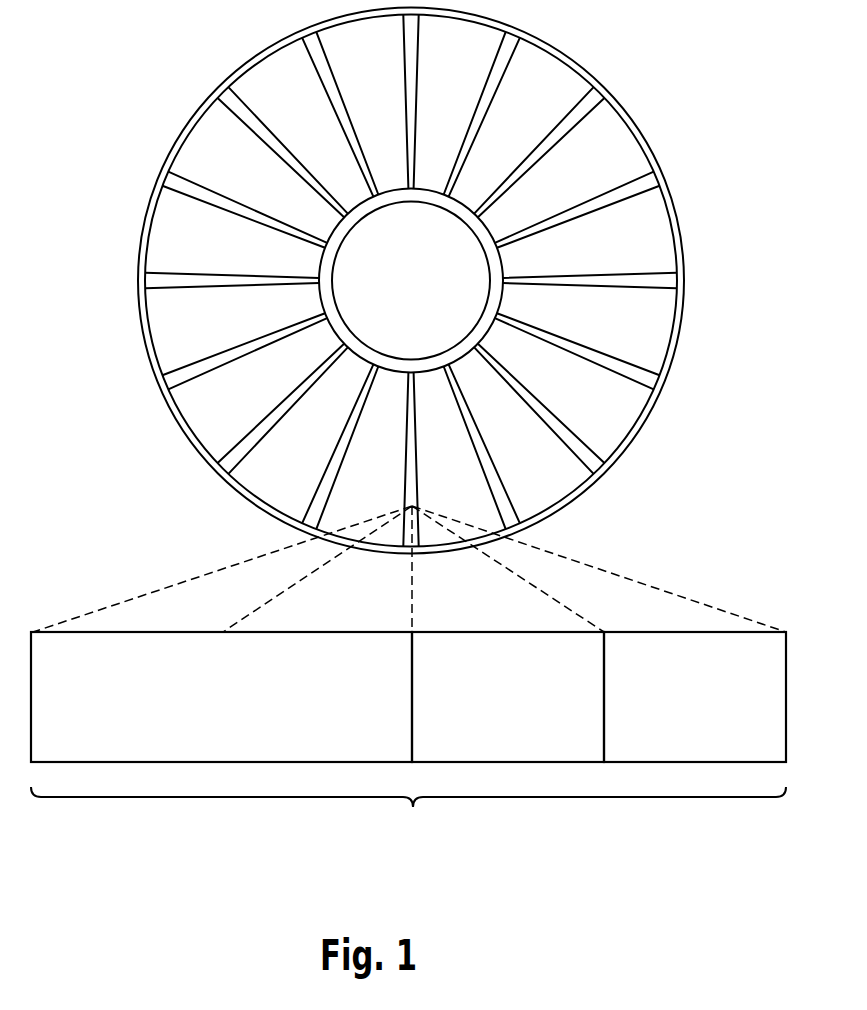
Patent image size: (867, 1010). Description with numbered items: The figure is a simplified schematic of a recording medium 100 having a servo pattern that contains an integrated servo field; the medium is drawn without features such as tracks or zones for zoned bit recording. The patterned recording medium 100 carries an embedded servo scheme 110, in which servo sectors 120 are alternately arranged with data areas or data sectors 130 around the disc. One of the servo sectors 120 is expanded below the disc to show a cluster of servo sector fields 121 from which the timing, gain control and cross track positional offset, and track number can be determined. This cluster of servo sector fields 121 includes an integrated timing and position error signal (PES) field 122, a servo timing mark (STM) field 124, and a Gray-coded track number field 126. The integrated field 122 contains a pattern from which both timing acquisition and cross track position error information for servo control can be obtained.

The recording medium 100 is at (109, 111).
The embedded servo scheme 110 is at (218, 233).
The servo sectors 120 is at (243, 453).
The data sectors 130 is at (630, 325).
The cluster of servo sector fields 121 is at (408, 674).
The integrated timing and position error signal (PES) field 122 is at (125, 694).
The servo timing mark (STM) field 124 is at (502, 696).
The Gray-coded track number field 126 is at (685, 674).